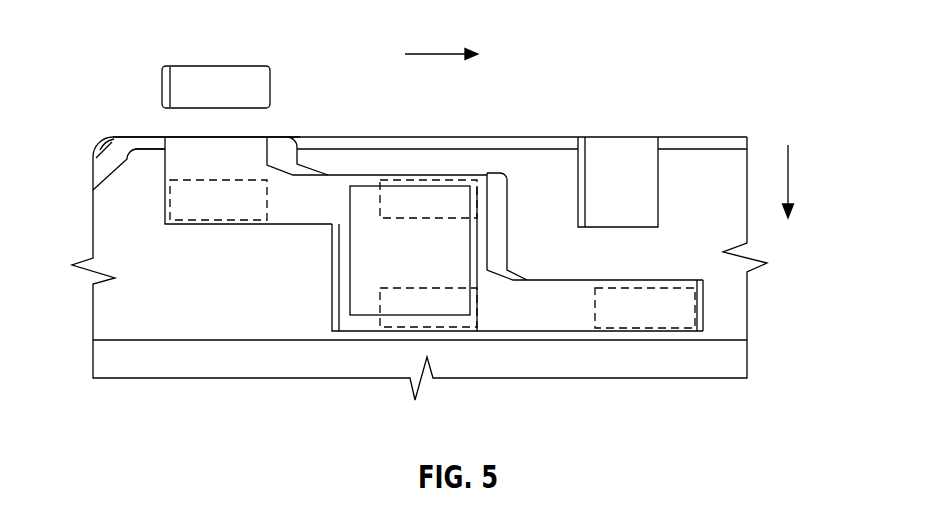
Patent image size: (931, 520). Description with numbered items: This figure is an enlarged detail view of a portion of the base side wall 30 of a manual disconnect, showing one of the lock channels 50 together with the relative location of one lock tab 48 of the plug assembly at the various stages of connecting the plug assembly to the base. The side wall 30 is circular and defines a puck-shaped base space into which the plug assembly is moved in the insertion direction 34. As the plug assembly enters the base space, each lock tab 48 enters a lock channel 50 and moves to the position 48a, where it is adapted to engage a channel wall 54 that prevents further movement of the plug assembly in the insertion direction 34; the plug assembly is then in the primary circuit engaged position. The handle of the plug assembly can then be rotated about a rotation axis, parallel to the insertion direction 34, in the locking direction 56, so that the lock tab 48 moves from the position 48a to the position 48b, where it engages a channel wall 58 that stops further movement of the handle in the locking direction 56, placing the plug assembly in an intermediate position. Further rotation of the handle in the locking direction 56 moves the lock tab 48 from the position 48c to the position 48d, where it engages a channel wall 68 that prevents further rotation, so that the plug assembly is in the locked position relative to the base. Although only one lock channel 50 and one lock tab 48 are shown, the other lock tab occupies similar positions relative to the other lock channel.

The base side wall 30 is at (702, 150).
The insertion direction 34 is at (790, 180).
The lock tab 48 is at (224, 64).
The lock tab position 48a is at (170, 197).
The lock tab position 48b is at (425, 178).
The lock tab position 48c is at (405, 333).
The lock tab position 48d is at (635, 330).
The lock channel 50 is at (176, 136).
The channel wall 54 is at (222, 228).
The locking direction 56 is at (441, 53).
The channel wall 58 is at (497, 187).
The channel wall 68 is at (698, 297).